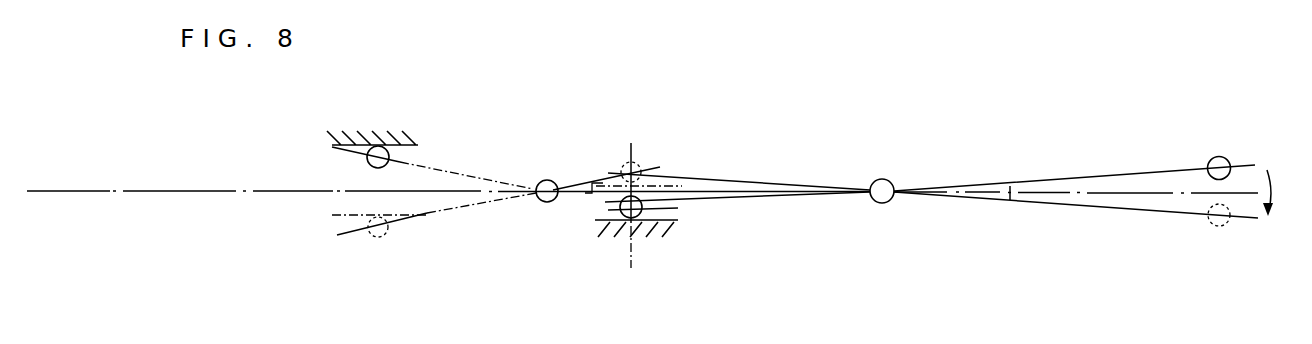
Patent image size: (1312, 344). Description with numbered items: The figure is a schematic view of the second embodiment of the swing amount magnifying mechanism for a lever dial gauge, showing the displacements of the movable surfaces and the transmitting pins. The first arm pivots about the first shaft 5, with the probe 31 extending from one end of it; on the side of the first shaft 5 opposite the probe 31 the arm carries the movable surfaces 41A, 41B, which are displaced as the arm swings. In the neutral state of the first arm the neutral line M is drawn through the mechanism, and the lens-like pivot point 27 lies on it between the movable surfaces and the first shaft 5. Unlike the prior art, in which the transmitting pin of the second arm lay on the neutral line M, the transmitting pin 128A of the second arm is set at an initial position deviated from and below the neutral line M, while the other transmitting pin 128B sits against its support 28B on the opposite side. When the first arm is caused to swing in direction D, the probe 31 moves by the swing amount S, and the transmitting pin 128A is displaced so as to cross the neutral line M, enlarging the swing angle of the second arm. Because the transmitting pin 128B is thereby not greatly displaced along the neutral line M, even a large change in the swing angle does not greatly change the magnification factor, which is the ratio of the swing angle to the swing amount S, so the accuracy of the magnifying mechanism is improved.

The neutral line M is at (220, 190).
The lens 27 is at (553, 202).
The transmitting pin 128B is at (385, 150).
The movable surface 41B is at (406, 146).
The mirror support 28B is at (387, 217).
The movable surface 41A is at (673, 187).
The transmitting pin 128A is at (652, 232).
The first shaft 5 is at (885, 203).
The swing amount S is at (1010, 200).
The probe 31 is at (1218, 157).
The swing direction D is at (1279, 193).